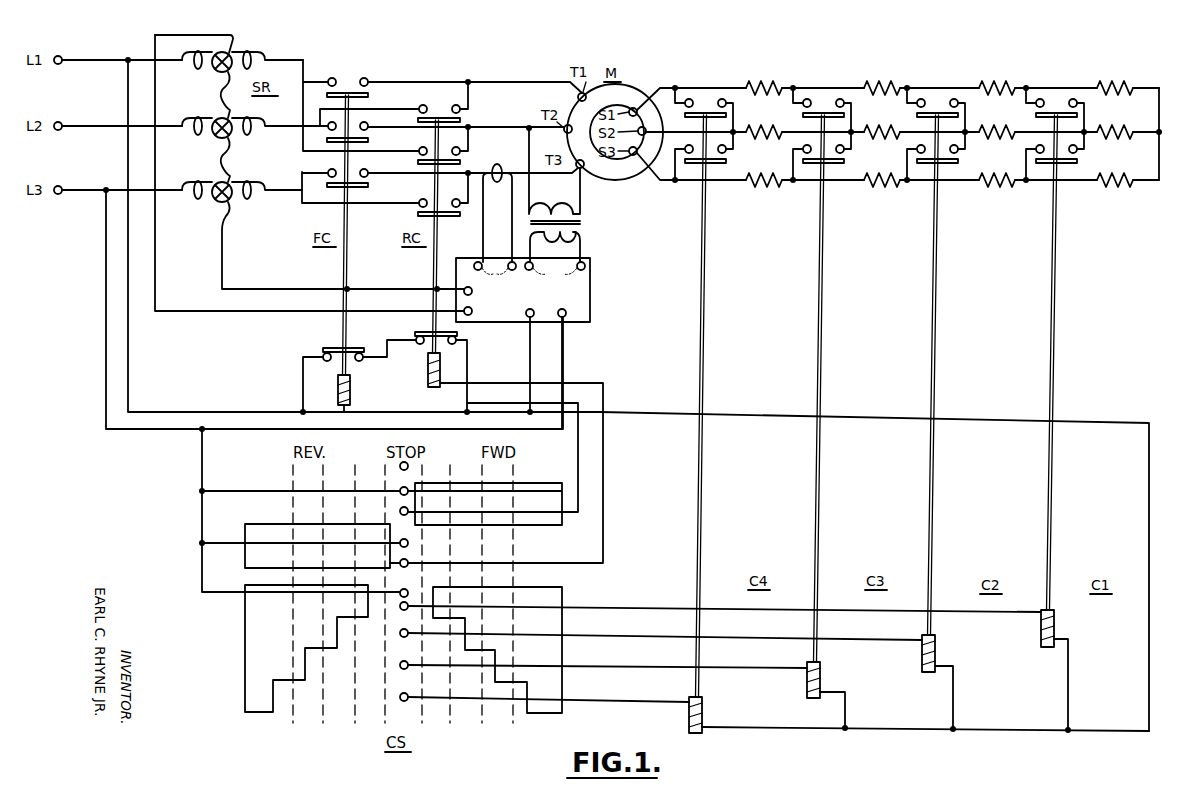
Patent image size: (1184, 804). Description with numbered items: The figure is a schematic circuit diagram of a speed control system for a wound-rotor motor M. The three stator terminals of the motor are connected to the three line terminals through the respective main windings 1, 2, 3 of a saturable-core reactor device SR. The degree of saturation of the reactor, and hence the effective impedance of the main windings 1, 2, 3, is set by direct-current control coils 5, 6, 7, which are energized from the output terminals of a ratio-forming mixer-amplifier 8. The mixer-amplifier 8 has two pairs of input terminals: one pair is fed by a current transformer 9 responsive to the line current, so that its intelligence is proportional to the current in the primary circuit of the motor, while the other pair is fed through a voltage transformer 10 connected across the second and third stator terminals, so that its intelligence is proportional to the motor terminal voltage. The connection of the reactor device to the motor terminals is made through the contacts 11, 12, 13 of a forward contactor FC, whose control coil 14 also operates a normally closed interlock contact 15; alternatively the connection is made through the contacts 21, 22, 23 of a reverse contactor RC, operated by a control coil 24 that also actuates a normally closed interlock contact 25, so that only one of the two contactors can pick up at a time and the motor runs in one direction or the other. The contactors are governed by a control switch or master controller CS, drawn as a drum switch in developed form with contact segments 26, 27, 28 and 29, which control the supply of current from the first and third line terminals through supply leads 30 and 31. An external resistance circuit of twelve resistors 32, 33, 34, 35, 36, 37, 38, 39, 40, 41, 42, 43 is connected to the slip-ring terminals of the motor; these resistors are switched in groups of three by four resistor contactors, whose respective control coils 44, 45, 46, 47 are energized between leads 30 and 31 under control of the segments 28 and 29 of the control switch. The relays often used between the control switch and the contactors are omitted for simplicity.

The main winding 1 is at (256, 52).
The main winding 2 is at (257, 118).
The main winding 3 is at (257, 183).
The direct-current control coil 5 is at (232, 36).
The direct-current control coil 6 is at (236, 143).
The direct-current control coil 7 is at (236, 210).
The mixer-amplifier 8 is at (514, 324).
The current transformer 9 is at (497, 183).
The voltage transformer 10 is at (582, 222).
The contact 11 is at (368, 96).
The contact 12 is at (368, 141).
The contact 13 is at (368, 186).
The control coil 14 is at (337, 385).
The normally closed interlock contact 15 is at (333, 346).
The contact 21 is at (458, 118).
The contact 22 is at (458, 162).
The contact 23 is at (415, 215).
The control coil 24 is at (428, 370).
The normally closed interlock contact 25 is at (419, 332).
The contact segment 26 is at (557, 520).
The contact segment 27 is at (245, 526).
The contact segment 28 is at (562, 593).
The contact segment 29 is at (245, 640).
The supply lead 30 is at (128, 343).
The supply lead 31 is at (106, 368).
The resistor 32 is at (773, 86).
The resistor 33 is at (773, 130).
The resistor 34 is at (773, 177).
The resistor 35 is at (891, 86).
The resistor 36 is at (891, 130).
The resistor 37 is at (891, 177).
The resistor 38 is at (1005, 86).
The resistor 39 is at (1005, 130).
The resistor 40 is at (1005, 177).
The resistor 41 is at (1123, 86).
The resistor 42 is at (1123, 130).
The resistor 43 is at (1123, 177).
The control coil 44 is at (1055, 628).
The control coil 45 is at (936, 654).
The control coil 46 is at (821, 680).
The control coil 47 is at (703, 713).